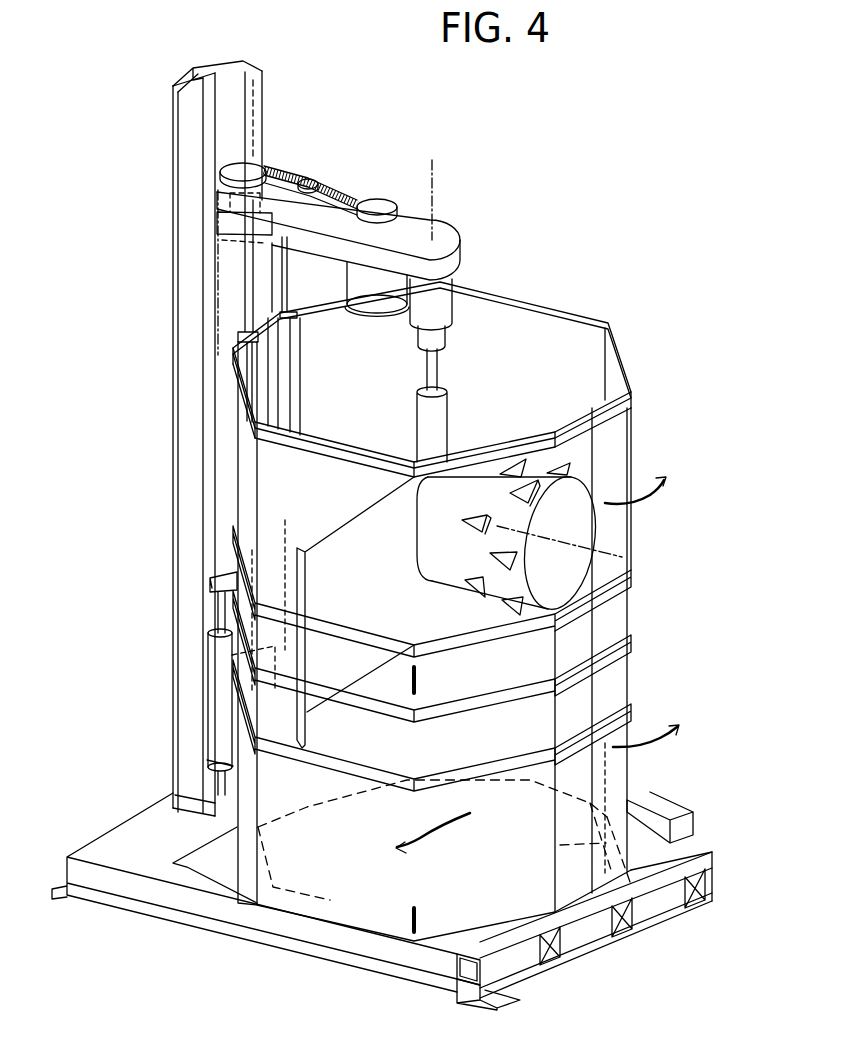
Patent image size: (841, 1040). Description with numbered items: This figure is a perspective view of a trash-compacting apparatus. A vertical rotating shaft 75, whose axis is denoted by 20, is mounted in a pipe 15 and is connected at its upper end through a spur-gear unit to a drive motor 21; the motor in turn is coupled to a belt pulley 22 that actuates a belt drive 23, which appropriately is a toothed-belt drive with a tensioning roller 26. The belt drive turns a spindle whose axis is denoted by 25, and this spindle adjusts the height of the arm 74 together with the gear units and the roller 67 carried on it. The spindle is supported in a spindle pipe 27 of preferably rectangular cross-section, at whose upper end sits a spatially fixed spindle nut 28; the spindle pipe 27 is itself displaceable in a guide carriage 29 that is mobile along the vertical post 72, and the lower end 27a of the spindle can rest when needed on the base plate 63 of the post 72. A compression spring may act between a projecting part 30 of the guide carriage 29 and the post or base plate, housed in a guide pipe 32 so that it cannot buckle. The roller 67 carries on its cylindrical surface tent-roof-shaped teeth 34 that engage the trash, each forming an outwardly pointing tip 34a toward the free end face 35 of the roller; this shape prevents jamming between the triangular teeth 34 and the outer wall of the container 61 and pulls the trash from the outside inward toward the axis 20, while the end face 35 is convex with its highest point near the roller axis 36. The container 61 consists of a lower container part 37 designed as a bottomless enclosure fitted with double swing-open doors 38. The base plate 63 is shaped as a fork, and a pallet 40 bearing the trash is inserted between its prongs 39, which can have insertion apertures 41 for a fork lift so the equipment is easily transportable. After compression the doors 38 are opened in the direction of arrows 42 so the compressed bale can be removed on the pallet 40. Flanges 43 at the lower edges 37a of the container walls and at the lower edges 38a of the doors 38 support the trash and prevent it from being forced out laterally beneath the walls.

The pipe 15 is at (445, 411).
The axis of the shaft 20 is at (436, 168).
The drive motor 21 is at (370, 296).
The belt pulley 22 is at (378, 203).
The belt drive 23 is at (340, 188).
The axis of the spindle 25 is at (247, 125).
The tensioning roller 26 is at (310, 179).
The spindle pipe 27 is at (226, 261).
The lower end of the spindle 27a is at (273, 648).
The spindle nut 28 is at (227, 212).
The guide carriage 29 is at (218, 460).
The projecting part of the guide carriage 30 is at (210, 580).
The guide pipe 32 is at (210, 706).
The teeth 34 is at (464, 578).
The outwardly pointing tip 34a is at (572, 457).
The free end face of the roller 35 is at (590, 494).
The axis of the roller 36 is at (614, 560).
The lower container part 37 is at (641, 793).
The lower edges of the container walls 37a is at (287, 903).
The double swing-open doors 38 is at (614, 674).
The lower edges of the double swing doors 38a is at (633, 880).
The prongs 39 is at (690, 817).
The pallet 40 is at (580, 973).
The insertion apertures 41 is at (458, 967).
The arrows 42 is at (663, 757).
The flanges 43 is at (587, 887).
The container 61 is at (579, 306).
The base plate 63 is at (134, 928).
The roller 67 is at (449, 577).
The vertical post 72 is at (258, 66).
The arm 74 is at (469, 256).
The vertical rotating shaft 75 is at (434, 364).